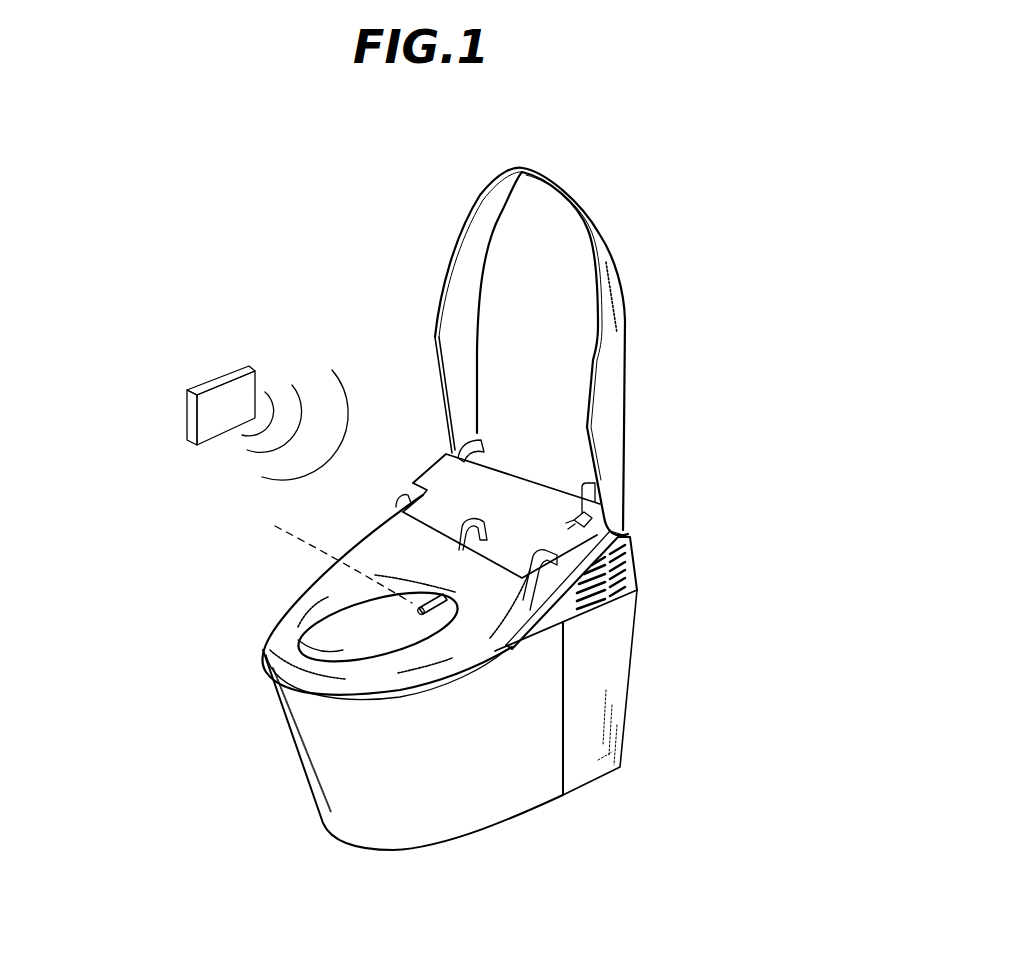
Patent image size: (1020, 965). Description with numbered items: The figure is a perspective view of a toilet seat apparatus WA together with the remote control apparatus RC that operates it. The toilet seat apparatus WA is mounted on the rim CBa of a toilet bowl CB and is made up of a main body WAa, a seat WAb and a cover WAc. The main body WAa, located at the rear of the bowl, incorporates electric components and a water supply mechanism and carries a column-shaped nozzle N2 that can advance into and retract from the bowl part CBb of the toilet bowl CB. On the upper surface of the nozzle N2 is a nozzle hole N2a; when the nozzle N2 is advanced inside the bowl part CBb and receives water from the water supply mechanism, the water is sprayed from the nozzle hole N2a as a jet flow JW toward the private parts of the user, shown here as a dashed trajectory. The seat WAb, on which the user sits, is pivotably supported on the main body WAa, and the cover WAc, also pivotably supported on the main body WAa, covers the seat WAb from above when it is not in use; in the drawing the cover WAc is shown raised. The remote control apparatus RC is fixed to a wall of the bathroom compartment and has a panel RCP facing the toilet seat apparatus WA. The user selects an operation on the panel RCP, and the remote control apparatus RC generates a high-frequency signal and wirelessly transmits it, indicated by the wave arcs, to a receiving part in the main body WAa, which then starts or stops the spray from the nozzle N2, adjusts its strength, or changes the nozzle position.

The toilet seat apparatus WA is at (480, 450).
The main body WAa is at (626, 549).
The seat WAb is at (293, 618).
The cover WAc is at (612, 347).
The nozzle N2 is at (410, 607).
The nozzle hole N2a is at (419, 603).
The jet flow JW is at (323, 555).
The remote control apparatus RC is at (222, 439).
The panel RCP is at (220, 417).
The toilet bowl CB is at (407, 720).
The rim CBa is at (418, 683).
The bowl part CBb is at (340, 648).